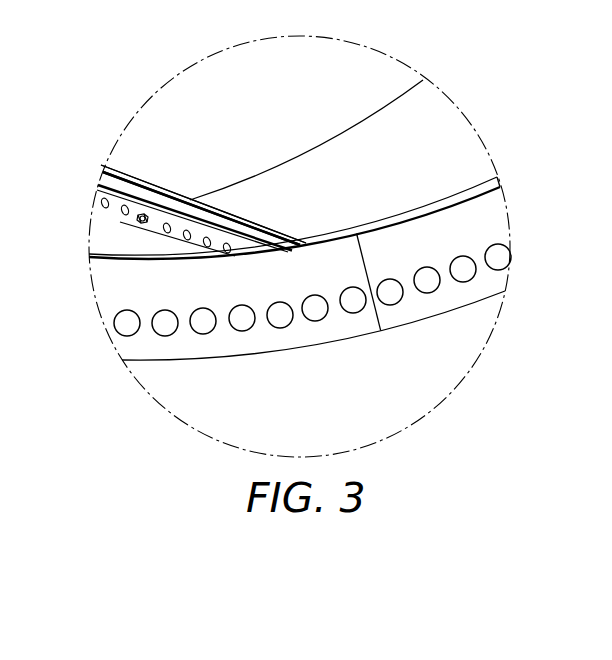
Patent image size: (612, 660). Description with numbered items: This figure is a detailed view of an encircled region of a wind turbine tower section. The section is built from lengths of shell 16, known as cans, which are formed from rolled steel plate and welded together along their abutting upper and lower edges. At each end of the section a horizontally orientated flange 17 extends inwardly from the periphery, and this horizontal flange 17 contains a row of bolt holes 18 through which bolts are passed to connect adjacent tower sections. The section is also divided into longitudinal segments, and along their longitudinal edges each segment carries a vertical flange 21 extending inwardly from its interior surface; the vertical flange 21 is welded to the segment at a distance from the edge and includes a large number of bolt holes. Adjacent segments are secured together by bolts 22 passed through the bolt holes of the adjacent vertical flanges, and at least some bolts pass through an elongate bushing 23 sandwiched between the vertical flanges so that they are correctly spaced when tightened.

The shell 16 is at (432, 127).
The horizontal flange 17 is at (265, 349).
The bolt holes 18 is at (432, 286).
The vertical flange 21 is at (97, 204).
The bolt 22 is at (136, 219).
The elongate bushing 23 is at (152, 191).